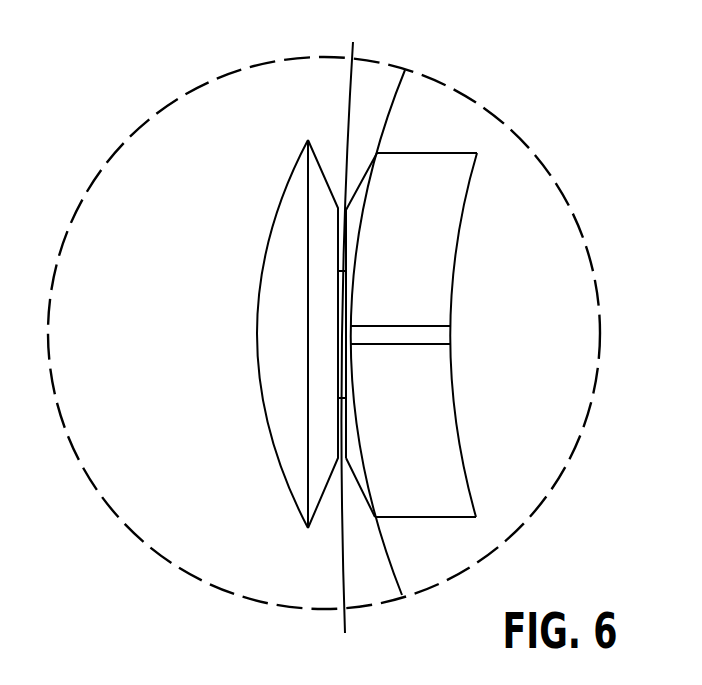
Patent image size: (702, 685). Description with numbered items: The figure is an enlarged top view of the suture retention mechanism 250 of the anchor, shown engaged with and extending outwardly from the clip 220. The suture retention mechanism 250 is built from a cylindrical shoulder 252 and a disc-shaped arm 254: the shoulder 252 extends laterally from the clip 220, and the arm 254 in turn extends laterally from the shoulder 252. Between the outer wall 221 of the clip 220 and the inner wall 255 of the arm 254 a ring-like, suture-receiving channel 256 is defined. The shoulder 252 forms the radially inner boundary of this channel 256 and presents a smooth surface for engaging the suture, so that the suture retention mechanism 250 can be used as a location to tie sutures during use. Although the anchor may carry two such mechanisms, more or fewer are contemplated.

The suture retention mechanism 250 is at (256, 196).
The cylindrical shoulder 252 is at (350, 70).
The disc-shaped arm 254 is at (275, 330).
The inner wall 255 is at (339, 231).
The suture-receiving channel 256 is at (348, 353).
The clip 220 is at (428, 242).
The outer wall 221 is at (353, 433).